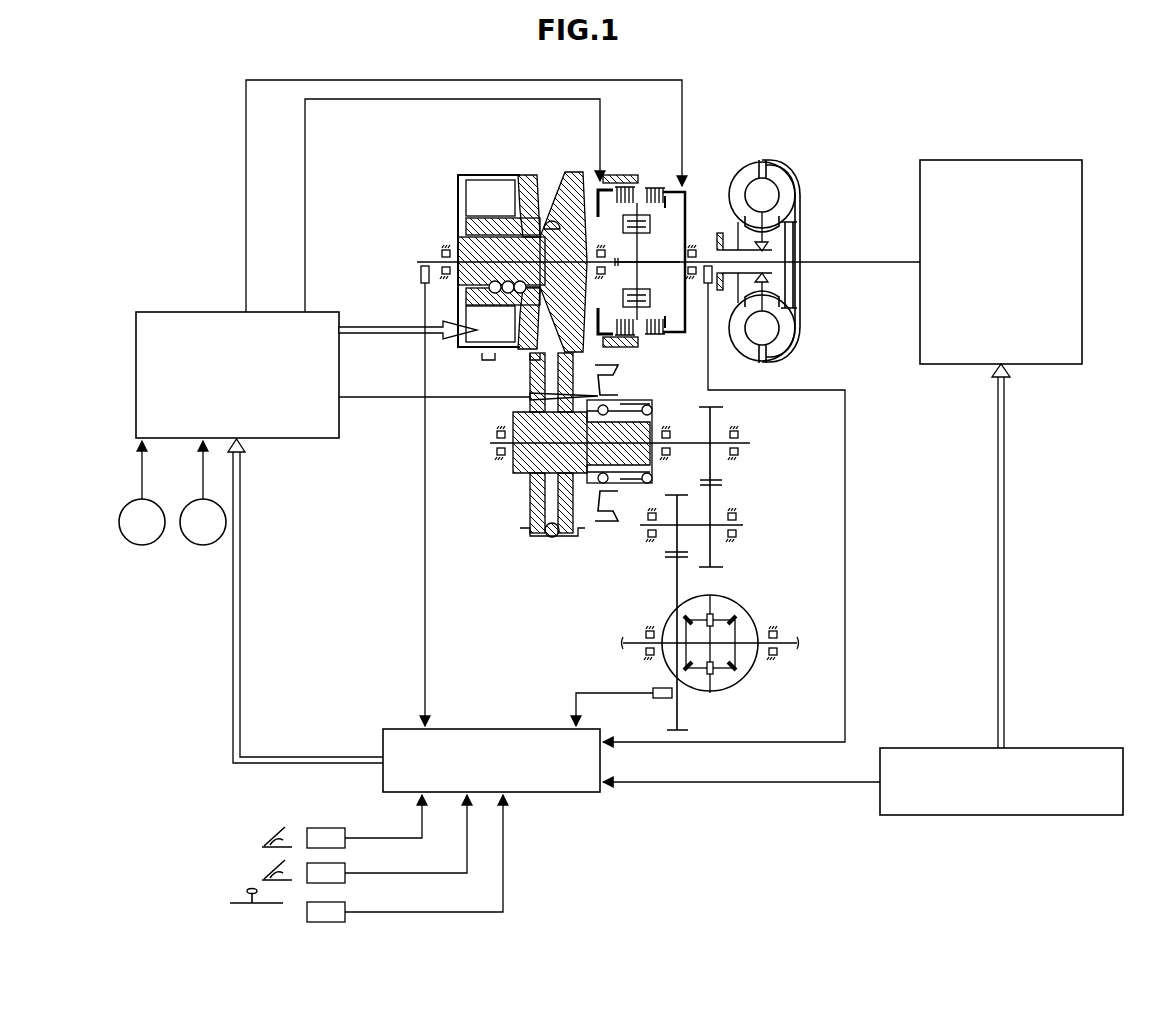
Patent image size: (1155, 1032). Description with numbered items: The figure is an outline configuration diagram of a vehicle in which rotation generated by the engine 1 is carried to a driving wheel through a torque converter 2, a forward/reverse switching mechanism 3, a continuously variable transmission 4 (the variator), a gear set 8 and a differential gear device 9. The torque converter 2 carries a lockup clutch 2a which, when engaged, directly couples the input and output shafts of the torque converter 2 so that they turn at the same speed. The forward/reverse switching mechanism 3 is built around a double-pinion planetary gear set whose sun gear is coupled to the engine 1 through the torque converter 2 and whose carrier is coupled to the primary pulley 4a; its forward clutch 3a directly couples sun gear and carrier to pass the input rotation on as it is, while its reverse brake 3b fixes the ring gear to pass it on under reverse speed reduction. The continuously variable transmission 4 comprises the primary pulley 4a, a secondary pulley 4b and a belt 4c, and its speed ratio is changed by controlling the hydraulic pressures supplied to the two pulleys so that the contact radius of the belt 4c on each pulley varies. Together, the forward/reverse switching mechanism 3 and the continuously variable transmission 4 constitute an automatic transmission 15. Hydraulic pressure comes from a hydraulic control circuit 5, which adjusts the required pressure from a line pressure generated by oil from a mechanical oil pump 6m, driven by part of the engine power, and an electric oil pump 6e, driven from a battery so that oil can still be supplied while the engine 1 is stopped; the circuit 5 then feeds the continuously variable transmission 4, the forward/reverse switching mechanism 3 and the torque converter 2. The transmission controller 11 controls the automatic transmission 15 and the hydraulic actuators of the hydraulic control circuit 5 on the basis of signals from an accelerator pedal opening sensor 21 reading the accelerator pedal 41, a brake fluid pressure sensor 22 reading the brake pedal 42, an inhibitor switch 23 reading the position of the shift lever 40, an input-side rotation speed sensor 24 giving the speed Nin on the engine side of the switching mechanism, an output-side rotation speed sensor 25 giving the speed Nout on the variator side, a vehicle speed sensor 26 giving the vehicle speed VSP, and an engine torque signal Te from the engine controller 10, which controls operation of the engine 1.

The engine 1 is at (1005, 160).
The torque converter 2 is at (786, 217).
The lockup clutch 2a is at (797, 238).
The forward/reverse switching mechanism 3 is at (641, 215).
The forward clutch 3a is at (660, 187).
The reverse brake 3b is at (628, 177).
The continuously variable transmission 4 is at (563, 359).
The primary pulley 4a is at (502, 236).
The secondary pulley 4b is at (615, 538).
The belt 4c is at (548, 222).
The hydraulic control circuit 5 is at (178, 312).
The mechanical oil pump 6m is at (142, 545).
The electric oil pump 6e is at (203, 545).
The gear set 8 is at (755, 472).
The differential gear device 9 is at (754, 603).
The engine controller 10 is at (1040, 748).
The transmission controller 11 is at (383, 745).
The automatic transmission 15 is at (572, 152).
The accelerator pedal opening sensor 21 is at (328, 828).
The brake fluid pressure sensor 22 is at (345, 877).
The inhibitor switch 23 is at (345, 915).
The input-side rotation speed sensor 24 is at (708, 266).
The output-side rotation speed sensor 25 is at (421, 274).
The vehicle speed sensor 26 is at (655, 698).
The shift lever 40 is at (245, 892).
The accelerator pedal 41 is at (270, 840).
The brake pedal 42 is at (268, 876).